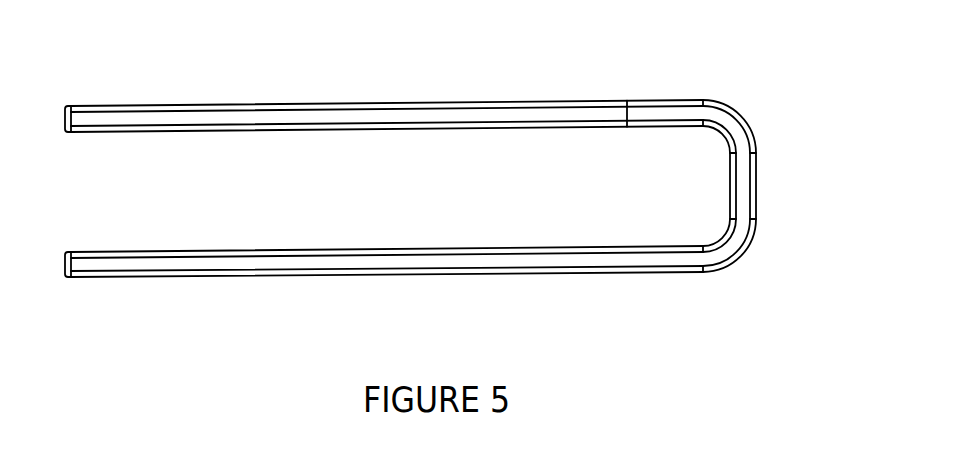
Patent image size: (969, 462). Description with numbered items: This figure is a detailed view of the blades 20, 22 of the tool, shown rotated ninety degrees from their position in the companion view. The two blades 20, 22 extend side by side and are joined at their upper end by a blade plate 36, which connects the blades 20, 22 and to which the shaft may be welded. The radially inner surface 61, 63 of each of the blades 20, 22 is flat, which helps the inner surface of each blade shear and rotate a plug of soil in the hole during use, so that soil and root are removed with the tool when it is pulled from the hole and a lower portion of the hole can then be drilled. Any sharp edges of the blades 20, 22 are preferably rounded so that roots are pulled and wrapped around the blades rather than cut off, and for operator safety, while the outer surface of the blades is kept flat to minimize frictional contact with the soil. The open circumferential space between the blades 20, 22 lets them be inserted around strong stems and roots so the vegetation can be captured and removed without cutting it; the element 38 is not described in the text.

The blade 20 is at (292, 118).
The blade 22 is at (268, 260).
The blade plate 36 is at (758, 210).
The inner bend portion 38 is at (742, 180).
The radially inner surface 61 is at (423, 132).
The radially inner surface 63 is at (512, 247).